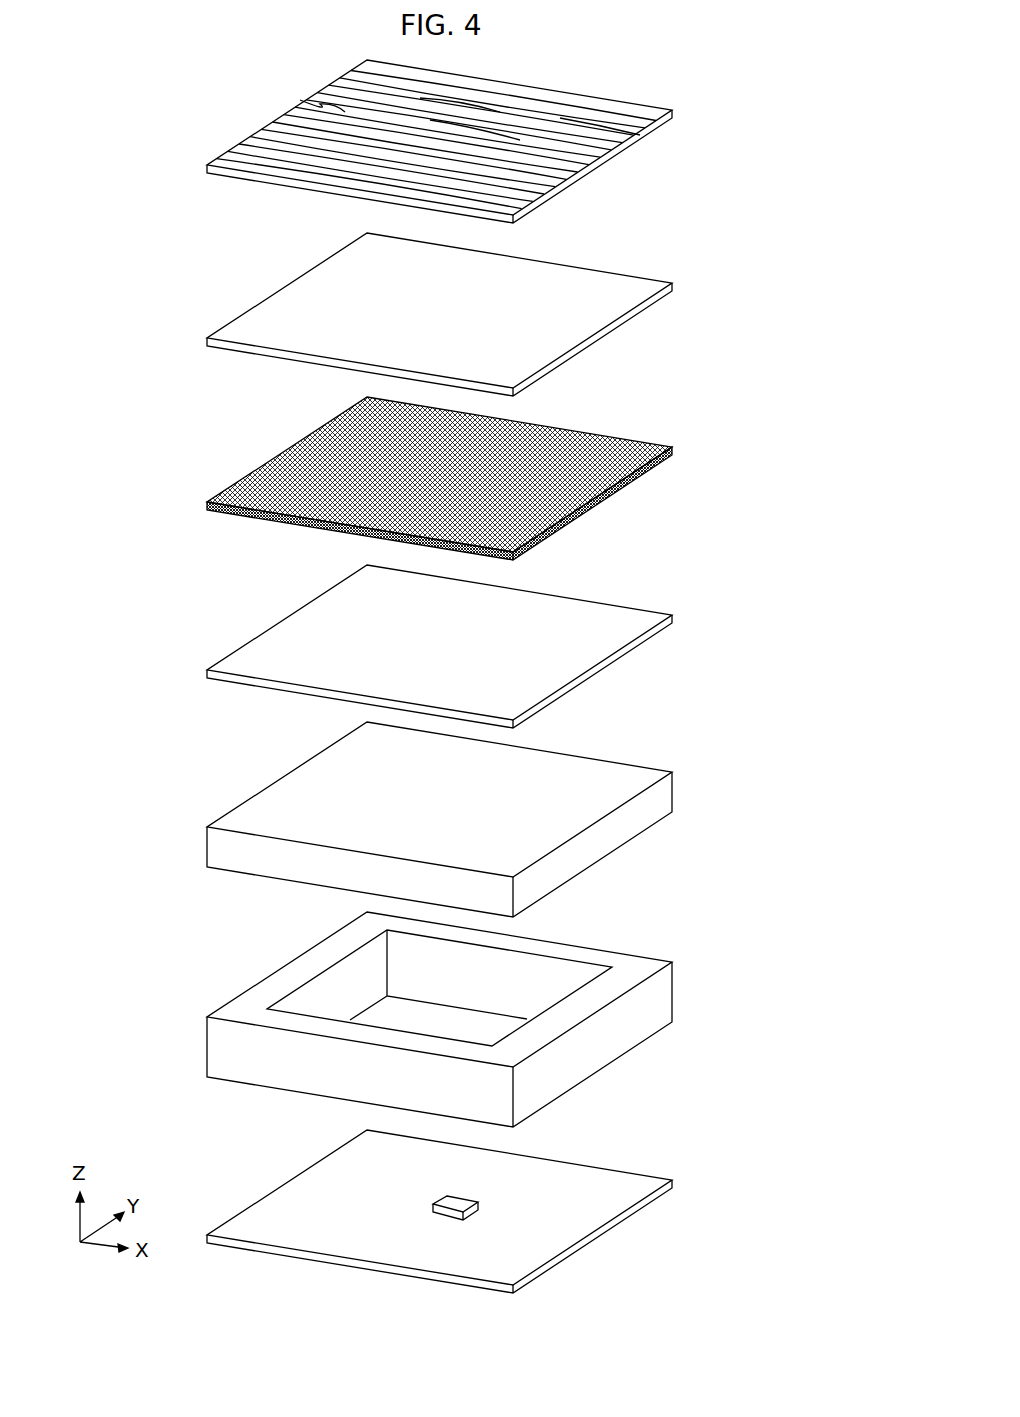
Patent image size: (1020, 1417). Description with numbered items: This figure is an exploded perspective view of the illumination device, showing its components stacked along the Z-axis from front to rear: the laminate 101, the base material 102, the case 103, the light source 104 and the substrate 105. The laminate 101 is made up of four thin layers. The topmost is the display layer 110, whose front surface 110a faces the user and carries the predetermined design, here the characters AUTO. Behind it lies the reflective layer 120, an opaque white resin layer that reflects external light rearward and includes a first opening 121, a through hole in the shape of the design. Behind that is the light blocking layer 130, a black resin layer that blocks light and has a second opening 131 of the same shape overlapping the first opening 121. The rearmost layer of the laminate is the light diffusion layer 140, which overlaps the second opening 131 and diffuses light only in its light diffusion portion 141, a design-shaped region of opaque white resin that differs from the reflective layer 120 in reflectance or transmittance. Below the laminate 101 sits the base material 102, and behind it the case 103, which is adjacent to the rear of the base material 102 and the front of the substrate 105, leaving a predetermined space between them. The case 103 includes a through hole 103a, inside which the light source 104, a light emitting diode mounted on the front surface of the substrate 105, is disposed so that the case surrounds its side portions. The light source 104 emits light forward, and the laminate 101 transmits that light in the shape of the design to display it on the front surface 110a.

The laminate 101 is at (728, 597).
The display layer 110 is at (470, 140).
The front surface 110a is at (578, 110).
The reflective layer 120 is at (470, 314).
The first opening 121 is at (508, 314).
The light blocking layer 130 is at (470, 478).
The second opening 131 is at (512, 472).
The light diffusion layer 140 is at (470, 646).
The light diffusion portion 141 is at (507, 650).
The base material 102 is at (655, 772).
The case 103 is at (470, 1014).
The through hole 103a is at (567, 958).
The light source 104 is at (465, 1200).
The substrate 105 is at (470, 1211).